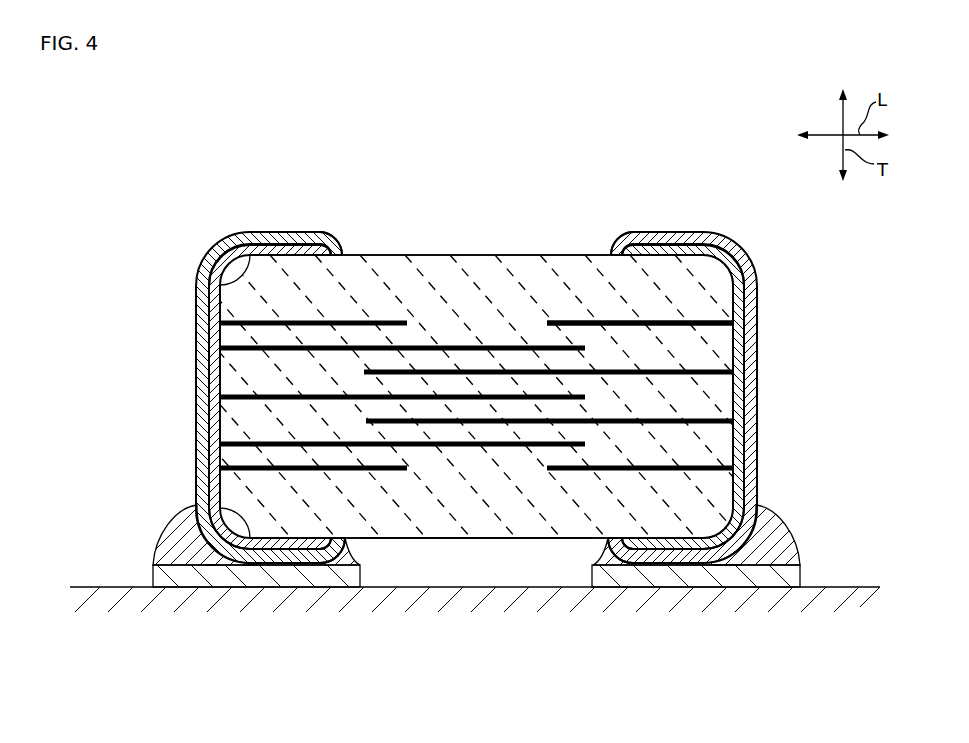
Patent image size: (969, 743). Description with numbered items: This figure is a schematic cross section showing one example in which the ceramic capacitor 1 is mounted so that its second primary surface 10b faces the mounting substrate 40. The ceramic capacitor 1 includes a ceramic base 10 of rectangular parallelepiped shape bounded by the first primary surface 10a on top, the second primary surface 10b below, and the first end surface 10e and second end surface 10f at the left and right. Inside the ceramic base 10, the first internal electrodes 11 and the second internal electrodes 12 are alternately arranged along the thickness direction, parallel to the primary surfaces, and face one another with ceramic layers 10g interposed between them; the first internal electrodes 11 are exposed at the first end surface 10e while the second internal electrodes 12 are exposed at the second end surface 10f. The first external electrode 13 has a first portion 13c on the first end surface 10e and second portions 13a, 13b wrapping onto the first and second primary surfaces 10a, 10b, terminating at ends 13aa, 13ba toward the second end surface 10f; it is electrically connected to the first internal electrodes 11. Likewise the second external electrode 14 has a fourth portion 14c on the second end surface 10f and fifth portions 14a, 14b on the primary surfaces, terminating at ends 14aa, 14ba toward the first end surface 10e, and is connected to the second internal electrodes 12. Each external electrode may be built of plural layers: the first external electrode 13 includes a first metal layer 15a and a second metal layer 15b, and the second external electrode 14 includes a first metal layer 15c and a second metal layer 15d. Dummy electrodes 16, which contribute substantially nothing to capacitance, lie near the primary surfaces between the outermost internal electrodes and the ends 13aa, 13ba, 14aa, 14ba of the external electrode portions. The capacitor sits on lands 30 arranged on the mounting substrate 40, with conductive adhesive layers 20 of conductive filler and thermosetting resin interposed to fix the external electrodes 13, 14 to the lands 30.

The ceramic capacitor 1 is at (483, 392).
The ceramic base 10 is at (542, 252).
The first primary surface 10a is at (460, 255).
The second primary surface 10b is at (478, 540).
The first end surface 10e is at (220, 428).
The second end surface 10f is at (737, 445).
The ceramic layer 10g is at (538, 432).
The first internal electrodes 11 is at (382, 348).
The second internal electrodes 12 is at (383, 421).
The first external electrode 13 is at (247, 408).
The second portion of first external electrode 13a is at (293, 232).
The end of second portion 13aa is at (342, 255).
The second portion of first external electrode 13b is at (283, 565).
The end of second portion 13ba is at (340, 565).
The first portion of first external electrode 13c is at (196, 338).
The second external electrode 14 is at (714, 406).
The fifth portion of second external electrode 14a is at (684, 232).
The end of fifth portion 14aa is at (612, 255).
The fifth portion of second external electrode 14b is at (672, 565).
The end of fifth portion 14ba is at (610, 565).
The fourth portion of second external electrode 14c is at (757, 344).
The first metal layer 15a is at (250, 566).
The second metal layer 15b is at (212, 566).
The first metal layer 15c is at (734, 566).
The second metal layer 15d is at (720, 566).
The dummy electrodes 16 is at (590, 323).
The conductive adhesive layers 20 is at (787, 530).
The lands 30 is at (800, 577).
The mounting substrate 40 is at (105, 587).